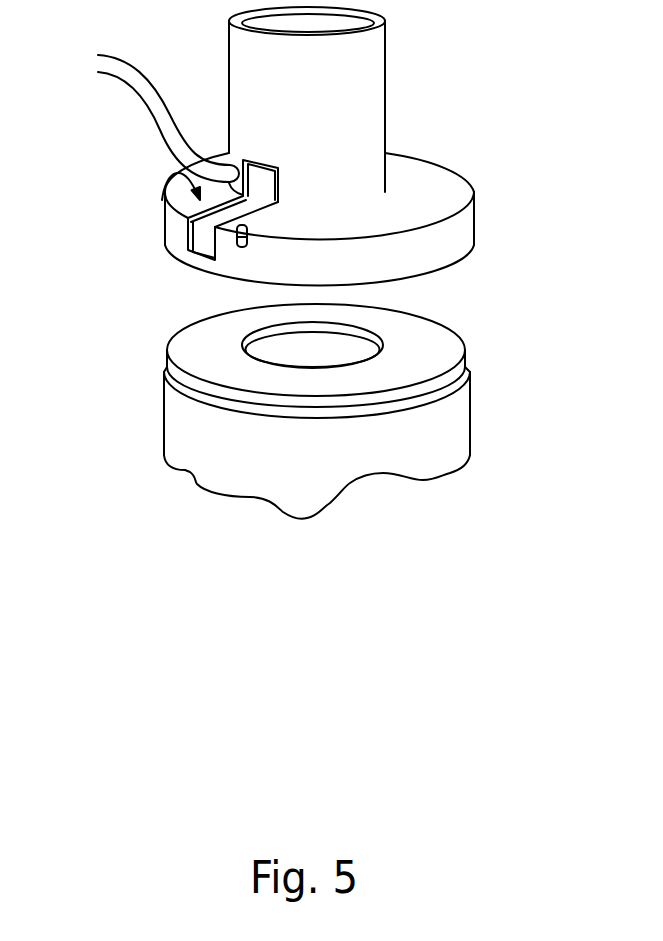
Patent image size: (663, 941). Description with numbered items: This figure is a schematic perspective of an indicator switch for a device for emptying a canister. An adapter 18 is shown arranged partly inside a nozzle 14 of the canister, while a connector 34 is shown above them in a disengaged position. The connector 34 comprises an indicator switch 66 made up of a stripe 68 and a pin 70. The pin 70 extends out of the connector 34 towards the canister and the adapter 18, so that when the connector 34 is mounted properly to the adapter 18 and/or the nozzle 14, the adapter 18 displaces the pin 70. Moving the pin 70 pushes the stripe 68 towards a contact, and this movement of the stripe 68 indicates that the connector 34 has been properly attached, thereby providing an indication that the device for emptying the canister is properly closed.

The nozzle 14 is at (397, 453).
The adapter 18 is at (423, 337).
The connector 34 is at (418, 175).
The indicator switch 66 is at (170, 181).
The stripe 68 is at (187, 253).
The pin 70 is at (211, 274).